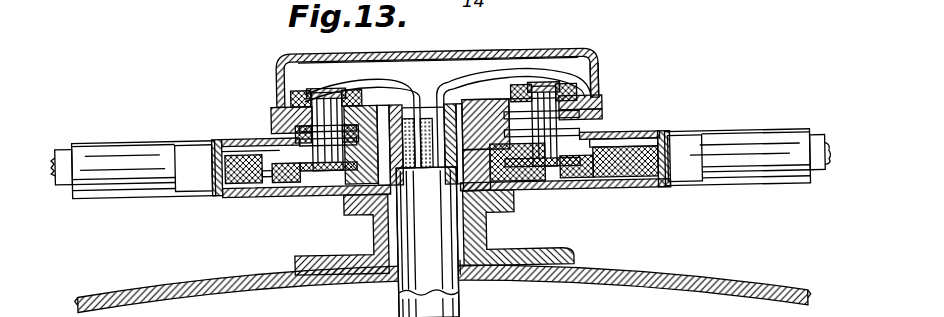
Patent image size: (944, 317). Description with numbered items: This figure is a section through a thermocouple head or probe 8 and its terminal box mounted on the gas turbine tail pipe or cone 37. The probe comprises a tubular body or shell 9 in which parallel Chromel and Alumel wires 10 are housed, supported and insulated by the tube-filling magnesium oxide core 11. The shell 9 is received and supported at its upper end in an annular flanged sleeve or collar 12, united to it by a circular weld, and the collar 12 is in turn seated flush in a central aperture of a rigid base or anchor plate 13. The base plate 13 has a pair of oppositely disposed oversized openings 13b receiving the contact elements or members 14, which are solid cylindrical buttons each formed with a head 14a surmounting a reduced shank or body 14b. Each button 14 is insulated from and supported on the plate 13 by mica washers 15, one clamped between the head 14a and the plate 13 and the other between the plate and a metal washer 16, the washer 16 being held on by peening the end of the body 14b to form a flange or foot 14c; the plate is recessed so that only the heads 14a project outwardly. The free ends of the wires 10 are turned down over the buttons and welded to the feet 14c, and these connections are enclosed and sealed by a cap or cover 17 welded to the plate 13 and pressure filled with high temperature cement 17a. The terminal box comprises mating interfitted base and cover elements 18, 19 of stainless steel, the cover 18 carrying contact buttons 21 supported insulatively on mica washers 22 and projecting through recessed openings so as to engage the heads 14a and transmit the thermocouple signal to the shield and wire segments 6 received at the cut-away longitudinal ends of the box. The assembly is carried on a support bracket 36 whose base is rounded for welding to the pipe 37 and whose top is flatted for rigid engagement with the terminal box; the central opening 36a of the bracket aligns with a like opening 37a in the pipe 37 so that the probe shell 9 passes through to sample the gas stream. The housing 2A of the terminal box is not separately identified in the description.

The hub housing 2A is at (246, 197).
The shield and wire segments 6 is at (66, 149).
The thermocouple head or probe 8 is at (284, 55).
The tubular body or shell 9 is at (397, 284).
The wires 10 is at (434, 95).
The magnesium oxide core 11 is at (514, 121).
The annular flanged sleeve or collar 12 is at (388, 106).
The base or anchor plate 13 is at (273, 112).
The openings 13b is at (514, 101).
The contact elements or members 14 is at (306, 91).
The head 14a is at (603, 117).
The shank or body 14b is at (594, 105).
The flange or foot 14c is at (598, 74).
The mica washers 15 is at (291, 95).
The metal washer 16 is at (566, 88).
The cap or cover 17 is at (405, 56).
The high temperature cement 17a is at (530, 66).
The base element 18 is at (633, 190).
The cover element 19 is at (687, 131).
The contact buttons 21 is at (292, 196).
The mica washers 22 is at (315, 196).
The support means or bracket 36 is at (479, 231).
The central opening 36a is at (380, 226).
The tail pipe or cone 37 is at (149, 293).
The opening 37a is at (461, 272).